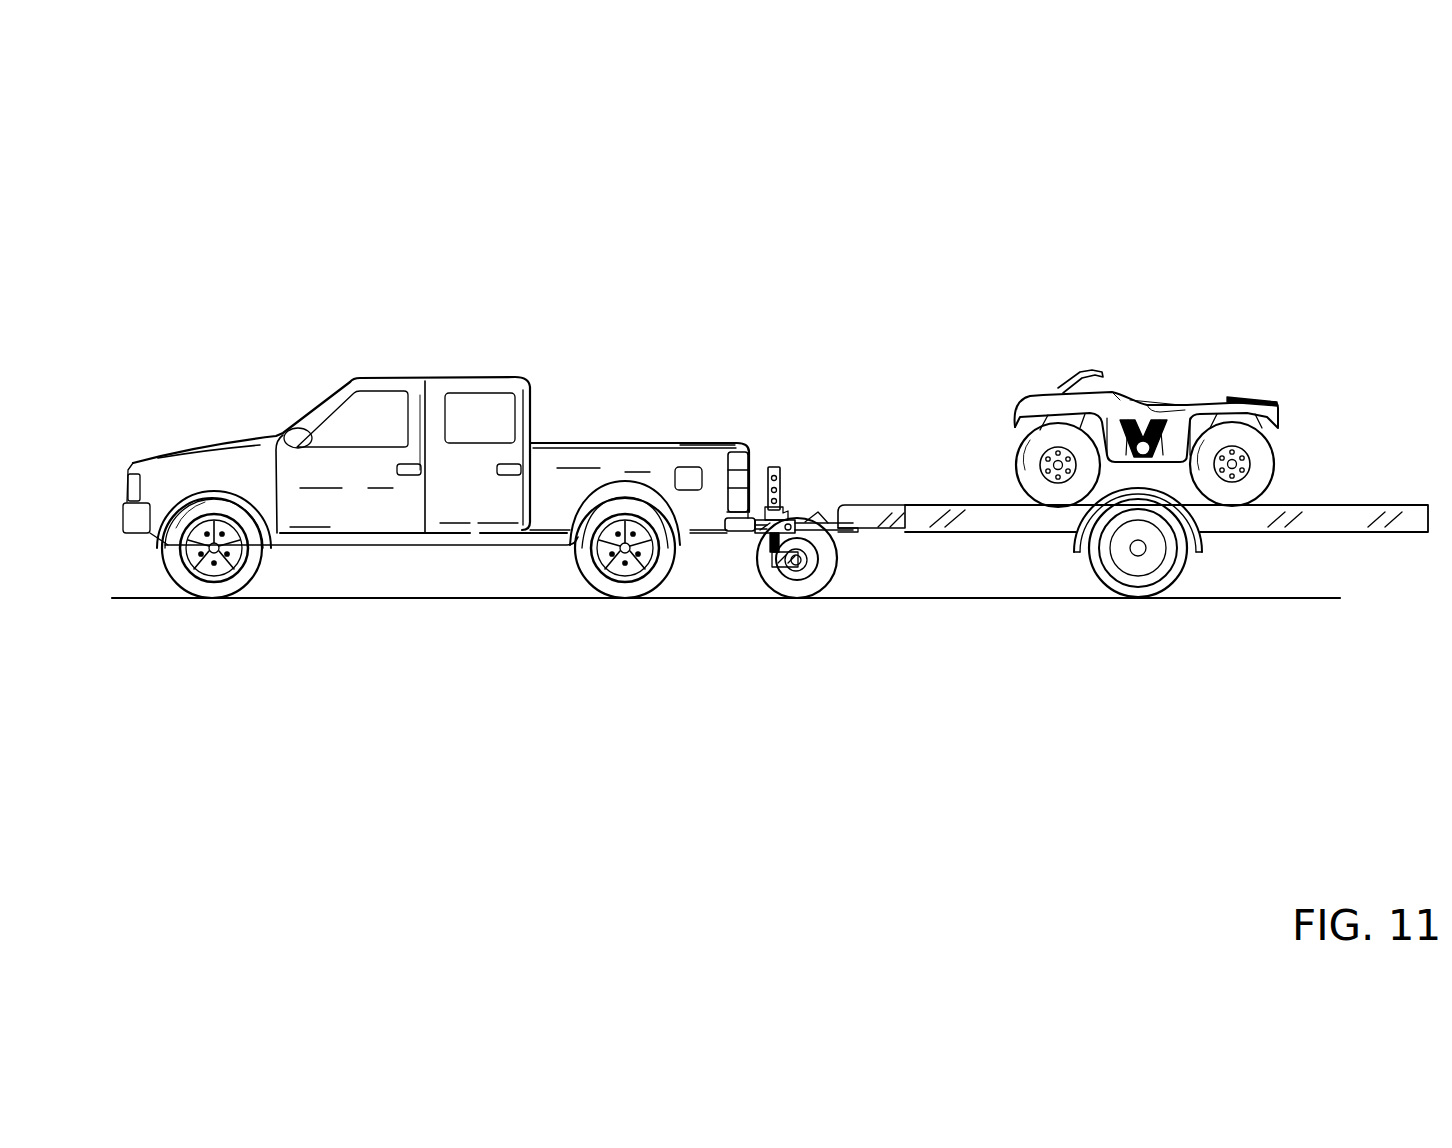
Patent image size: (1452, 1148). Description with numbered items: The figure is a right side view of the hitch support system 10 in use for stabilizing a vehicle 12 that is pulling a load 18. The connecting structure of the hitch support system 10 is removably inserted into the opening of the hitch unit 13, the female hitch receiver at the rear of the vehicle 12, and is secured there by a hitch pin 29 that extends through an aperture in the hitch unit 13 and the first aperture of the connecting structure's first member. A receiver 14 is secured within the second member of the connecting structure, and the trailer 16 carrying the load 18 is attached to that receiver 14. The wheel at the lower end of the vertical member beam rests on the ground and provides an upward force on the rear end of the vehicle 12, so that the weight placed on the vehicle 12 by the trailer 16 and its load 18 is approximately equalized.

The hitch support system 10 is at (822, 476).
The vehicle 12 is at (132, 463).
The hitch unit 13 is at (714, 527).
The receiver 14 is at (850, 540).
The trailer 16 is at (1042, 523).
The load 18 is at (1058, 403).
The hitch pin 29 is at (740, 537).